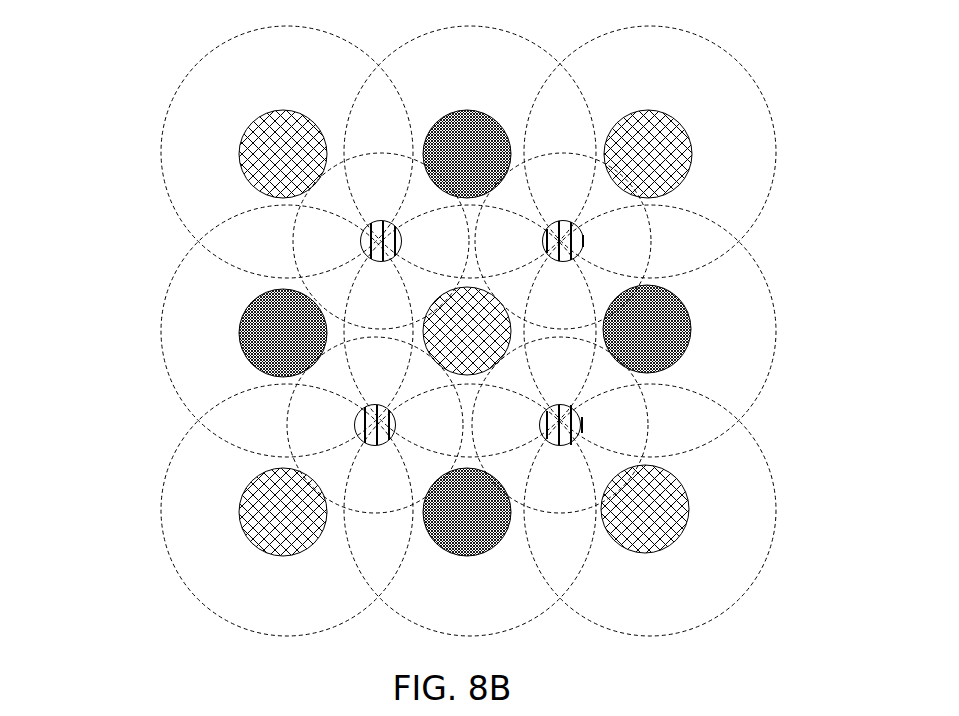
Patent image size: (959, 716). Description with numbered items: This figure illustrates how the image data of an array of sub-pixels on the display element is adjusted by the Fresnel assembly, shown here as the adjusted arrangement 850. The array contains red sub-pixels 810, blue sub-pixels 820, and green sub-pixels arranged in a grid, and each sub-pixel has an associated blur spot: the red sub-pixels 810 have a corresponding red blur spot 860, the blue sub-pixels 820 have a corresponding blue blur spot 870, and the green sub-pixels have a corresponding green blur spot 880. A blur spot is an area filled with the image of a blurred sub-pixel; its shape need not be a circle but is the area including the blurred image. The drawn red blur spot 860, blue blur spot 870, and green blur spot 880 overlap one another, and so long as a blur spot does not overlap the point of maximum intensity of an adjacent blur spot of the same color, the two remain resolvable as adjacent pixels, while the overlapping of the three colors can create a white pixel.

The sub-pixel arrangement with blur spots 850 is at (45, 70).
The red sub-pixels 810 is at (243, 151).
The blue sub-pixels 820 is at (242, 325).
The red blur spot 860 is at (667, 50).
The blue blur spot 870 is at (722, 278).
The green blur spot 880 is at (620, 435).